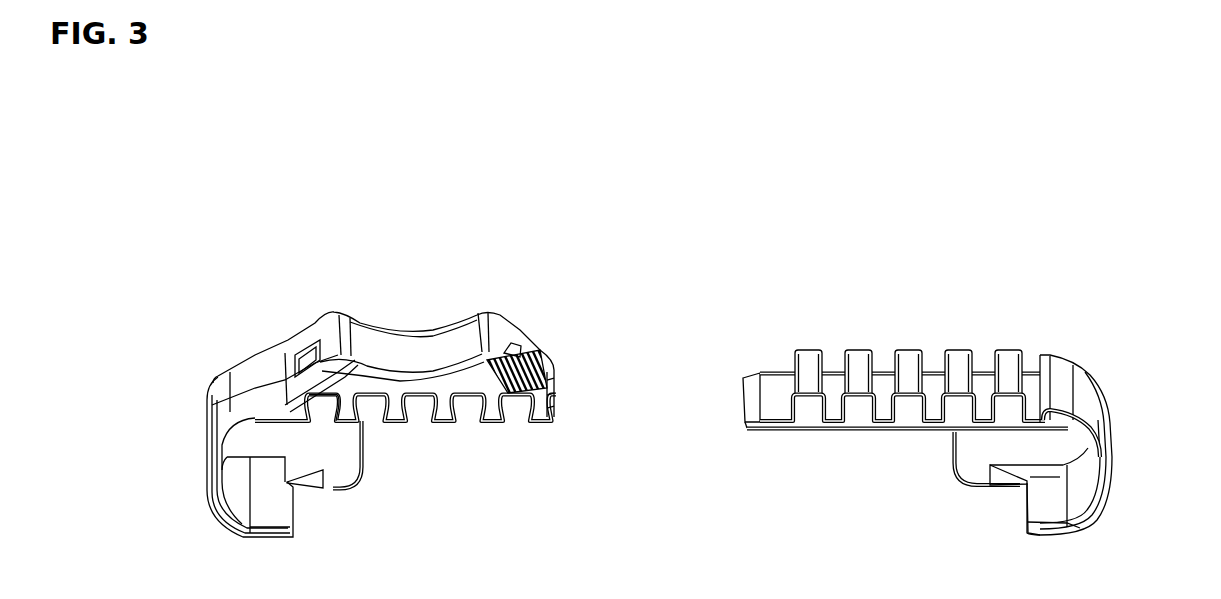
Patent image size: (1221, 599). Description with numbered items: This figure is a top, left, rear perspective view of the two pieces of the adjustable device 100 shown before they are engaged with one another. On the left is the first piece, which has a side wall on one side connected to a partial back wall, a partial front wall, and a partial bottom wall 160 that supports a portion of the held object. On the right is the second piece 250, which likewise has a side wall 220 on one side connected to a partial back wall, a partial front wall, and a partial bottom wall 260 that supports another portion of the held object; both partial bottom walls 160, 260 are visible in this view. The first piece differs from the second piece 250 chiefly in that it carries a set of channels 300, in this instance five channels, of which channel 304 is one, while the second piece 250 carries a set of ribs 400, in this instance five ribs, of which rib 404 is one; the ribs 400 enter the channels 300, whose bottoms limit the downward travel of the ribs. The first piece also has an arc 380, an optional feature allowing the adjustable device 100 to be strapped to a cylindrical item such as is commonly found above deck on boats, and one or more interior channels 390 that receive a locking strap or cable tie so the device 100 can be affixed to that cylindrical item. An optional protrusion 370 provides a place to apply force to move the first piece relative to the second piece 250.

The adjustable device 100 is at (96, 82).
The partial bottom wall 160 is at (332, 452).
The side wall 220 is at (1108, 455).
The second piece 250 is at (1107, 507).
The partial bottom wall 260 is at (998, 443).
The set of channels 300 is at (465, 388).
The channel 304 is at (322, 400).
The protrusion 370 is at (540, 358).
The arc 380 is at (390, 348).
The interior channel 390 is at (312, 362).
The set of ribs 400 is at (1007, 360).
The rib 404 is at (808, 360).